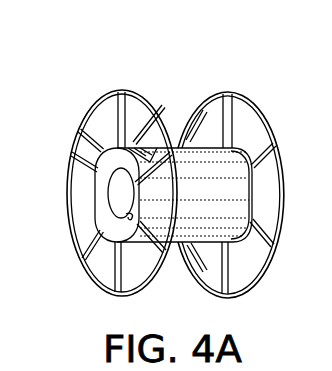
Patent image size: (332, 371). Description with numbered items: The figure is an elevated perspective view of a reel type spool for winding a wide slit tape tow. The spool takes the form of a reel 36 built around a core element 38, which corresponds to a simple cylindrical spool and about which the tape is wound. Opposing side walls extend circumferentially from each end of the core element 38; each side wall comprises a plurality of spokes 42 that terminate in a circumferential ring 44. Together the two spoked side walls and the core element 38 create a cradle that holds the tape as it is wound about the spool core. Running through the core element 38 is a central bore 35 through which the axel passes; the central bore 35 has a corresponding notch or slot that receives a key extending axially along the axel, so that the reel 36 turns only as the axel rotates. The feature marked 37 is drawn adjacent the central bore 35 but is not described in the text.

The reel 36 is at (91, 91).
The core element 38 is at (206, 160).
The circumferential ring 44 is at (265, 122).
The central bore 35 is at (118, 191).
The notch 37 is at (128, 214).
The spokes 42 is at (96, 236).